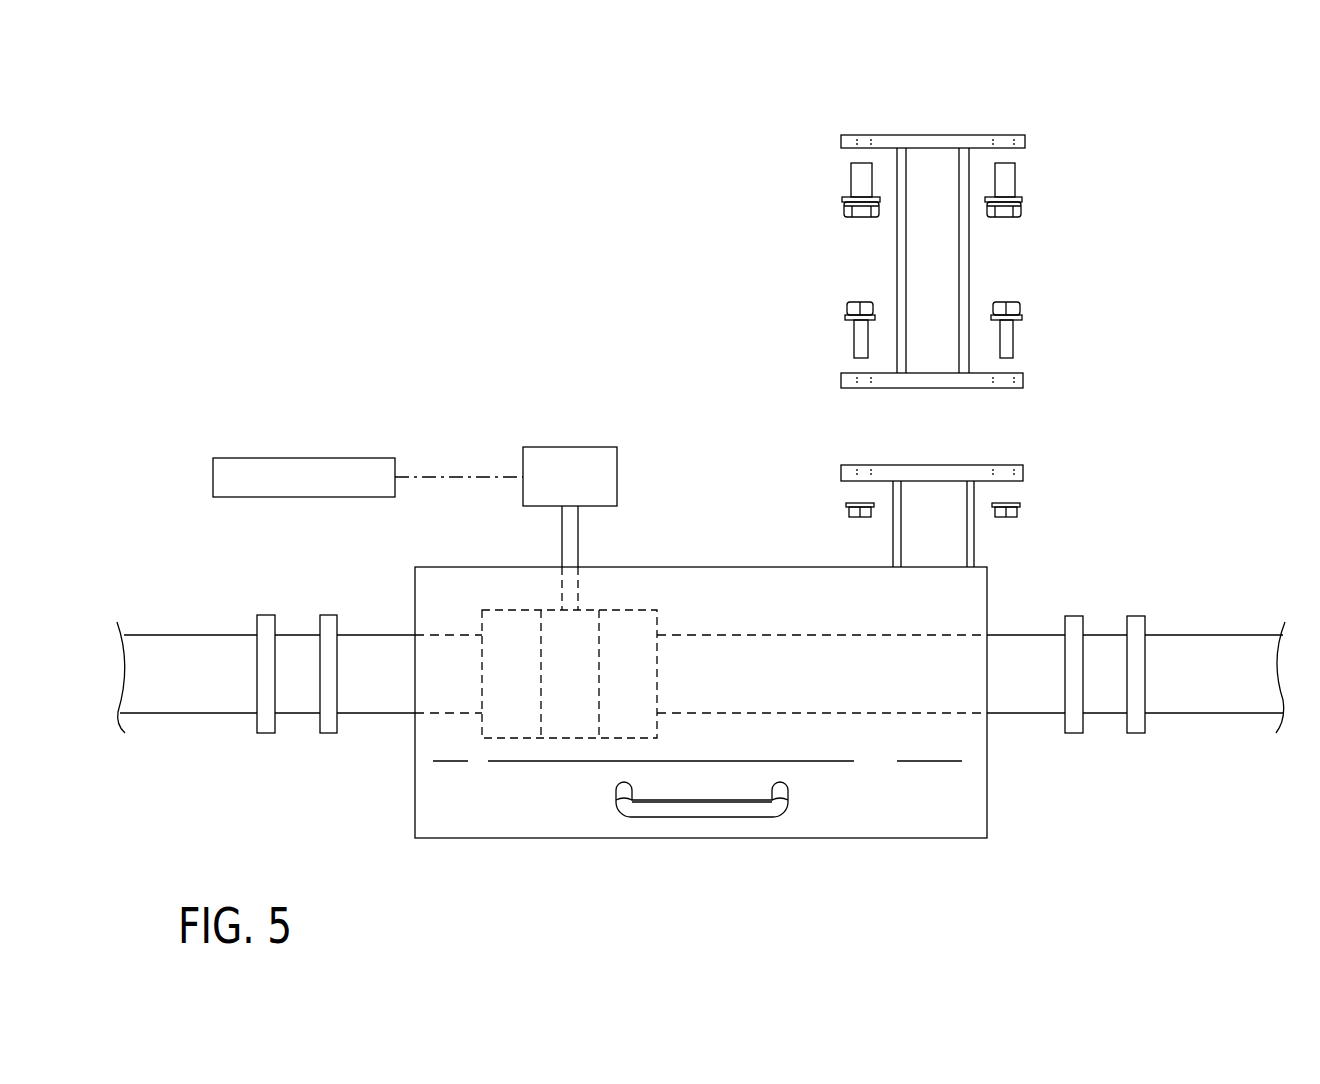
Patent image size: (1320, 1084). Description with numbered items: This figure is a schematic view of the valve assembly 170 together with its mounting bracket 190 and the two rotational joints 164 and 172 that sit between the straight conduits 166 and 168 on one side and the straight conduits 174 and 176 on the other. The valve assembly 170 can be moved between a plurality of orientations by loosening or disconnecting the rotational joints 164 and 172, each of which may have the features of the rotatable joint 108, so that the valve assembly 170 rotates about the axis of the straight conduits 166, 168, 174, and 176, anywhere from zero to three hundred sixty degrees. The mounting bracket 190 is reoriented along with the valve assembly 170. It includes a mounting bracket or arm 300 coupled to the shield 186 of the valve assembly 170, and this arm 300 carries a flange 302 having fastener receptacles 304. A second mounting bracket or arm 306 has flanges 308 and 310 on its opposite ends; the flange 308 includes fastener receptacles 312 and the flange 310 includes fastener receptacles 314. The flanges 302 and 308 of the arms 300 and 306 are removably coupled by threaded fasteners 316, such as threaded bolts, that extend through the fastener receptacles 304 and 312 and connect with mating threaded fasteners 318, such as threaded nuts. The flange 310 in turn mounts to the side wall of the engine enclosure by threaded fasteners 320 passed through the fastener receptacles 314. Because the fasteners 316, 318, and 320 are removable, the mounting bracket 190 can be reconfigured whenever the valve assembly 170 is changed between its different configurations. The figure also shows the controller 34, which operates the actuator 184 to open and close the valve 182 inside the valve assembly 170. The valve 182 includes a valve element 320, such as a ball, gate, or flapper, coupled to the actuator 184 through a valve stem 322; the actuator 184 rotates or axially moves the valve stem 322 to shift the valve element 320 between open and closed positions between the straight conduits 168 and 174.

The controller 34 is at (305, 457).
The rotatable joint 108 is at (701, 704).
The rotational joint 164 is at (307, 606).
The straight conduit 166 is at (196, 702).
The straight conduit 168 is at (370, 703).
The valve assembly 170 is at (821, 849).
The rotational joint 172 is at (1098, 605).
The straight conduit 174 is at (1020, 646).
The straight conduit 176 is at (1235, 647).
The valve 182 is at (512, 740).
The actuator 184 is at (568, 447).
The shield 186 is at (892, 840).
The mounting bracket 190 is at (861, 433).
The mounting bracket or arm 300 is at (960, 521).
The flange 302 is at (973, 437).
The fastener receptacles 304 is at (866, 470).
The mounting bracket or arm 306 is at (930, 162).
The flange 308 is at (978, 403).
The flange 310 is at (979, 100).
The fastener receptacles 312 is at (1007, 389).
The fastener receptacles 314 is at (853, 134).
The threaded fasteners 316 is at (1004, 336).
The mating threaded fasteners 318 is at (856, 511).
The threaded fasteners 320 is at (1008, 180).
The valve stem 322 is at (565, 537).